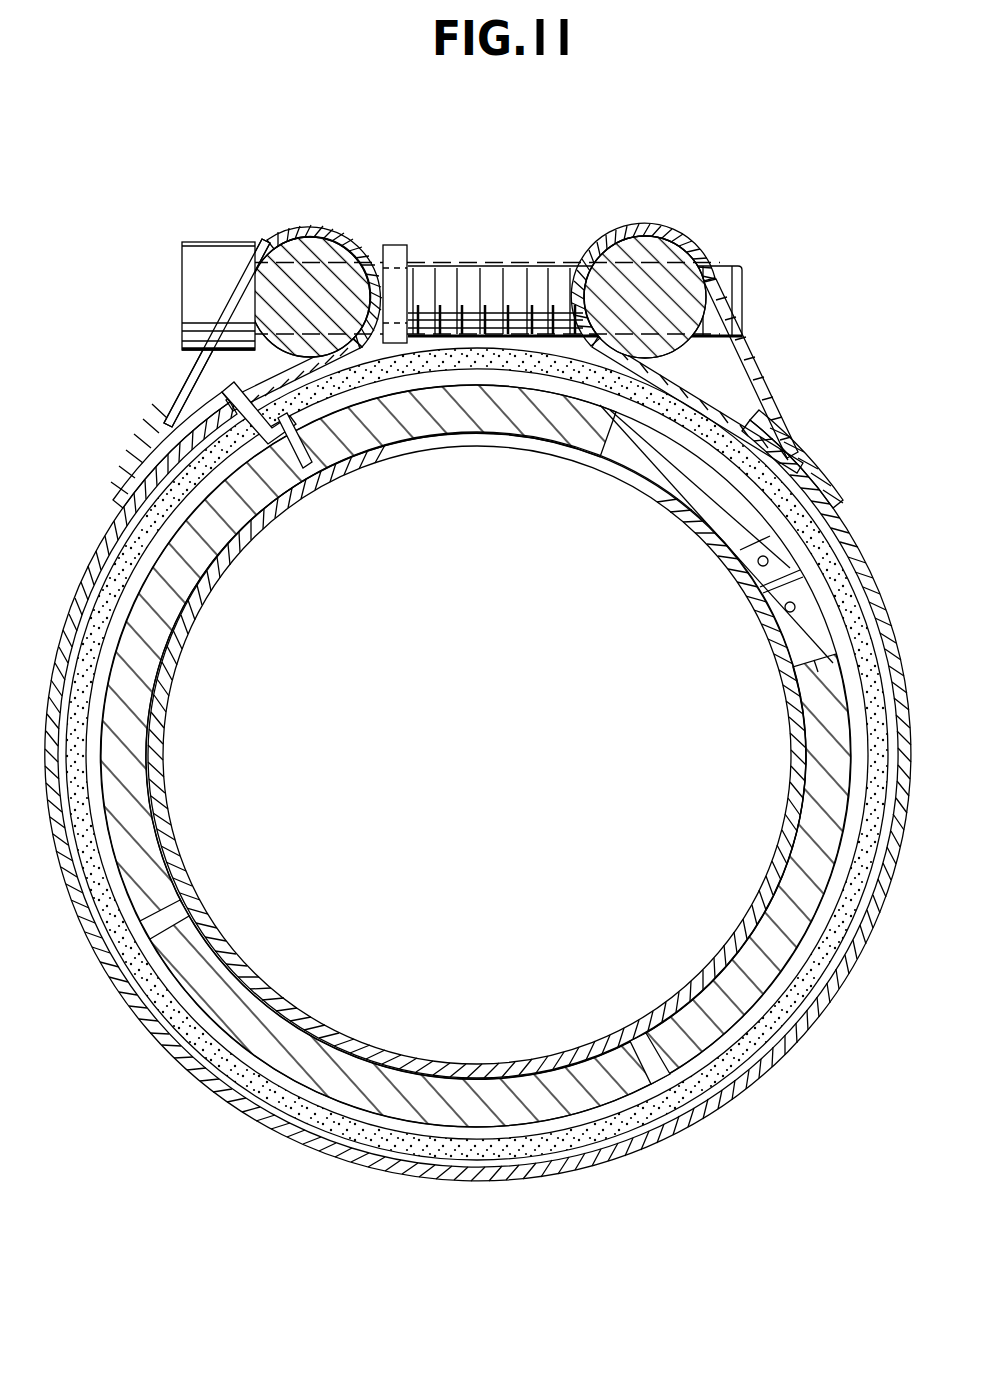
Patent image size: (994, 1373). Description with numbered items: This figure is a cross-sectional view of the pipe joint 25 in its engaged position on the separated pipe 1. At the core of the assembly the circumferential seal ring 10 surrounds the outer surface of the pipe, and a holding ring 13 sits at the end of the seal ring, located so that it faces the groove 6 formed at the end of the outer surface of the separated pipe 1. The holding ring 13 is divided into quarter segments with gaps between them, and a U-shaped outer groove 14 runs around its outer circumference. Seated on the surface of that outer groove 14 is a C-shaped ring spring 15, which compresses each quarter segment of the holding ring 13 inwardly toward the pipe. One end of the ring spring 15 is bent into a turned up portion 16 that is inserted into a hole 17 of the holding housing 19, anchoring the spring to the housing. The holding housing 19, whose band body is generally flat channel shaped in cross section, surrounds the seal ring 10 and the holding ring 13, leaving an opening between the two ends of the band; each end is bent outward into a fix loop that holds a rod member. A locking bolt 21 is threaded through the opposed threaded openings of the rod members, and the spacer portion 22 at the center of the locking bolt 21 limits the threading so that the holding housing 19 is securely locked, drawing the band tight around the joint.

The separated pipe 1 is at (692, 526).
The groove 6 is at (737, 560).
The circumferential seal ring 10 is at (832, 575).
The holding ring 13 is at (354, 434).
The outer groove 14 is at (848, 798).
The ring spring 15 is at (848, 663).
The turned up portion 16 is at (233, 402).
The hole 17 is at (243, 404).
The holding housing 19 is at (240, 1100).
The locking bolt 21 is at (208, 306).
The spacer portion 22 is at (402, 247).
The pipe joint 25 is at (562, 243).